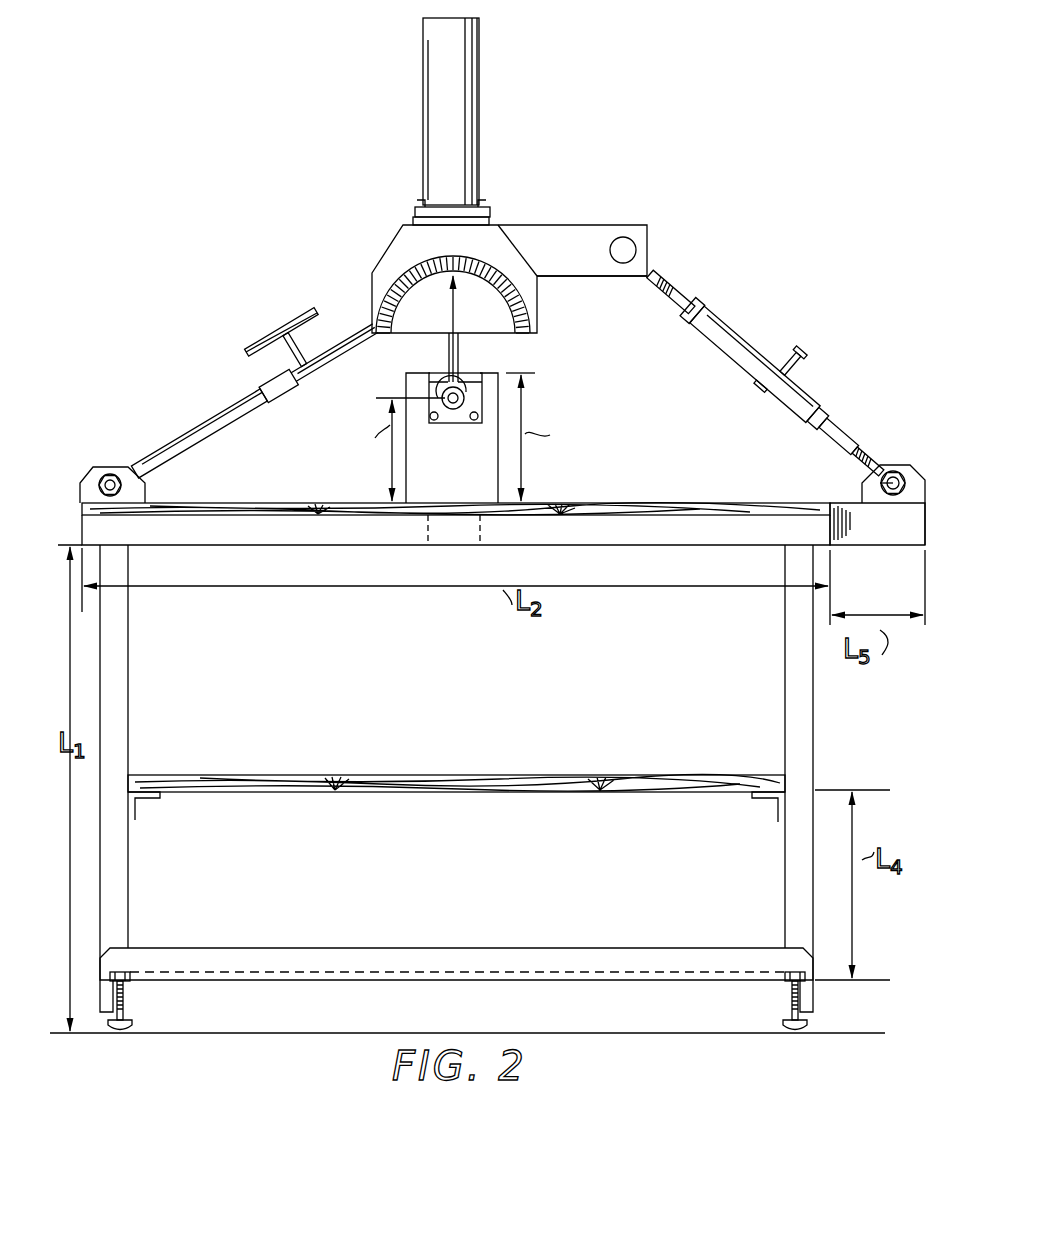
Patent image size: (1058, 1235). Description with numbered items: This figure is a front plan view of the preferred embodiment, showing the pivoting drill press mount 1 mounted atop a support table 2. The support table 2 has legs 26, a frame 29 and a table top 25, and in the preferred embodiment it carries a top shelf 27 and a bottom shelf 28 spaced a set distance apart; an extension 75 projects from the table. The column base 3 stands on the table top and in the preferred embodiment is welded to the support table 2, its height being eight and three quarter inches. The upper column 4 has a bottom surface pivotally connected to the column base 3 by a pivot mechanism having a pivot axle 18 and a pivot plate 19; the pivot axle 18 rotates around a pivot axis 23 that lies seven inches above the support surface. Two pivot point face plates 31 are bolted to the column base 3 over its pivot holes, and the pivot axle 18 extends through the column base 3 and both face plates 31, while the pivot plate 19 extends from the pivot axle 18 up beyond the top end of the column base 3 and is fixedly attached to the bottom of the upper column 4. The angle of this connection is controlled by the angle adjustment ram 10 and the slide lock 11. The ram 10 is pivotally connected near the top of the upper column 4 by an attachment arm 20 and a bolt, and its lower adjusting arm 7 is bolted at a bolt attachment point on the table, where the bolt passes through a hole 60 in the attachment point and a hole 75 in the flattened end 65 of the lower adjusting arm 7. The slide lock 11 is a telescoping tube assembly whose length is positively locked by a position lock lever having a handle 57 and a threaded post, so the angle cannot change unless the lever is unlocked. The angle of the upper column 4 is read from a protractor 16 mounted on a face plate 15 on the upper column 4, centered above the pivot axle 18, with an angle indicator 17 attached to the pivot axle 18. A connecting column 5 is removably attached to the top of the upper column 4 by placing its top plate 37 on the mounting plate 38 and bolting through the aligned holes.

The pivoting drill press mount 1 is at (213, 178).
The support table 2 is at (230, 550).
The column base 3 is at (405, 470).
The upper column 4 is at (370, 240).
The connecting column 5 is at (423, 70).
The lower adjusting arm 7 is at (875, 470).
The angle adjustment ram 10 is at (745, 326).
The slide lock 11 is at (238, 377).
The face plate 15 is at (493, 243).
The protractor 16 is at (525, 318).
The angle indicator 17 is at (453, 310).
The pivot axle 18 is at (455, 416).
The pivot plate 19 is at (460, 360).
The attachment arm 20 is at (588, 232).
The pivot axis 23 is at (122, 472).
The table top 25 is at (630, 505).
The legs 26 is at (128, 870).
The top shelf 27 is at (615, 775).
The bottom shelf 28 is at (655, 972).
The frame 29 is at (347, 530).
The pivot point face plate 31 is at (445, 430).
The top plate 37 is at (415, 210).
The mounting plate 38 is at (413, 223).
The handle 57 is at (312, 336).
The hole 60 is at (130, 490).
The flattened end 65 is at (897, 465).
The hole 75 is at (895, 507).